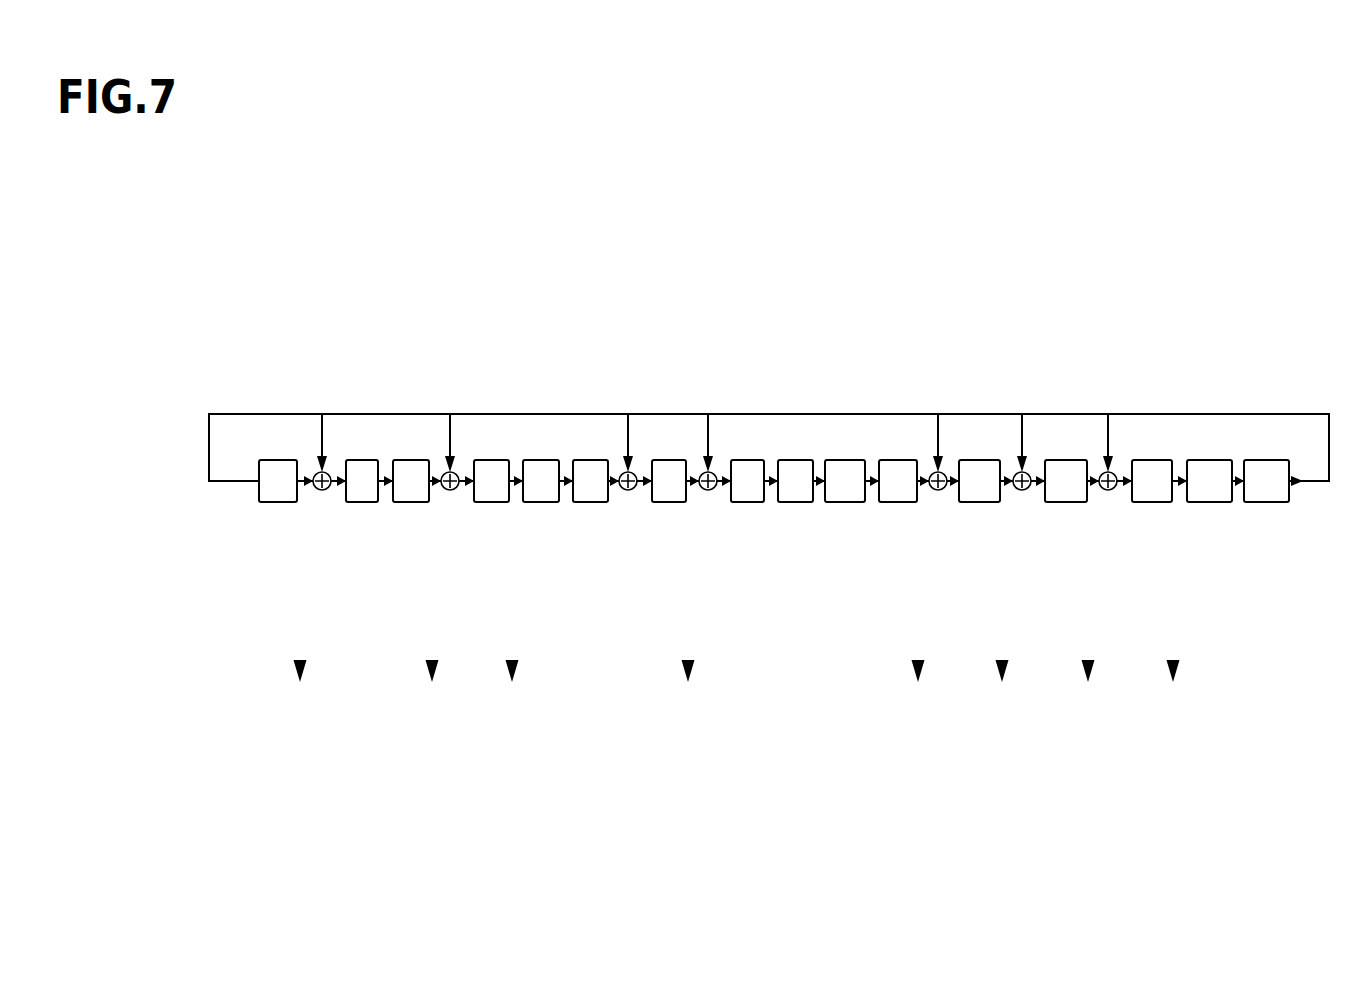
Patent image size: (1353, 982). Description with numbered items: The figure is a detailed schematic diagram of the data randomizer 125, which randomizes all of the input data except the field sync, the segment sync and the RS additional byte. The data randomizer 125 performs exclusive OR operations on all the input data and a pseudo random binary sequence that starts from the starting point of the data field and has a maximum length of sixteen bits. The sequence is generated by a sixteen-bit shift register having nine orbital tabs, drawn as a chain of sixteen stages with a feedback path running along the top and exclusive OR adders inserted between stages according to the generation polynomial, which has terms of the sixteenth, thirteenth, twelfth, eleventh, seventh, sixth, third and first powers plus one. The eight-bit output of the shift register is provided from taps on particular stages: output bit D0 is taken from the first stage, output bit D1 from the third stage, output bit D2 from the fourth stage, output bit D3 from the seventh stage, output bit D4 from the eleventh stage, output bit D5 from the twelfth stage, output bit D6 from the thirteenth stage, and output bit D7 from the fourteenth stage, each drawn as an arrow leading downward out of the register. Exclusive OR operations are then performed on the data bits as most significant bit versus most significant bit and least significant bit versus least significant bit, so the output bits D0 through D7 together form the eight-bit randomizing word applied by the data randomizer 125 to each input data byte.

The data randomizer 125 is at (757, 348).
The shift register output bit D0 is at (300, 481).
The shift register output bit D1 is at (432, 481).
The shift register output bit D2 is at (512, 481).
The shift register output bit D3 is at (688, 481).
The shift register output bit D4 is at (918, 481).
The shift register output bit D5 is at (1002, 481).
The shift register output bit D6 is at (1088, 481).
The shift register output bit D7 is at (1173, 481).